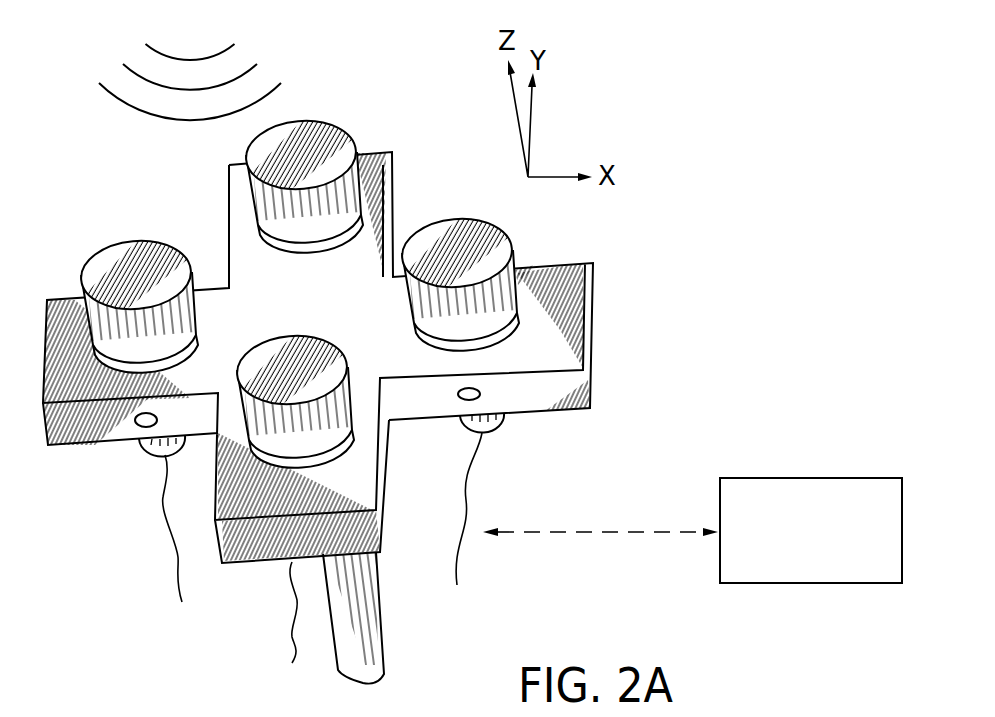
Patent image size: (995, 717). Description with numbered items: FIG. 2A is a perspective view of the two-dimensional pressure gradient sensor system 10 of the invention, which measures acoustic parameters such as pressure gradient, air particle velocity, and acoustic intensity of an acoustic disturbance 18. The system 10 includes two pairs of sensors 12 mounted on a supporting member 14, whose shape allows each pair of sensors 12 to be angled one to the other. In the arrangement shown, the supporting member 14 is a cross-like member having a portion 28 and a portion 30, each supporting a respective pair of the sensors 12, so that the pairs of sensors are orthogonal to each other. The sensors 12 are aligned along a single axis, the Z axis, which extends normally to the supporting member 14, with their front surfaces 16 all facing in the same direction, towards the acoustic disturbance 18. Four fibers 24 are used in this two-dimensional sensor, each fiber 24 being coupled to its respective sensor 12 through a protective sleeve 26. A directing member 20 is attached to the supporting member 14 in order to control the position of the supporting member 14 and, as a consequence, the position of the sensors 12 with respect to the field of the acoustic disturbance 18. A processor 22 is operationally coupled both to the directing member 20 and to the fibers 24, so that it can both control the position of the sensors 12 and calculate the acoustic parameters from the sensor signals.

The system 10 is at (728, 123).
The sensors 12 is at (380, 153).
The supporting member 14 is at (612, 345).
The front surfaces 16 is at (300, 150).
The acoustic disturbance 18 is at (128, 103).
The directing member 20 is at (383, 627).
The processor 22 is at (853, 478).
The fibers 24 is at (168, 557).
The protective sleeve 26 is at (145, 452).
The portion 28 is at (553, 316).
The portion 30 is at (257, 264).